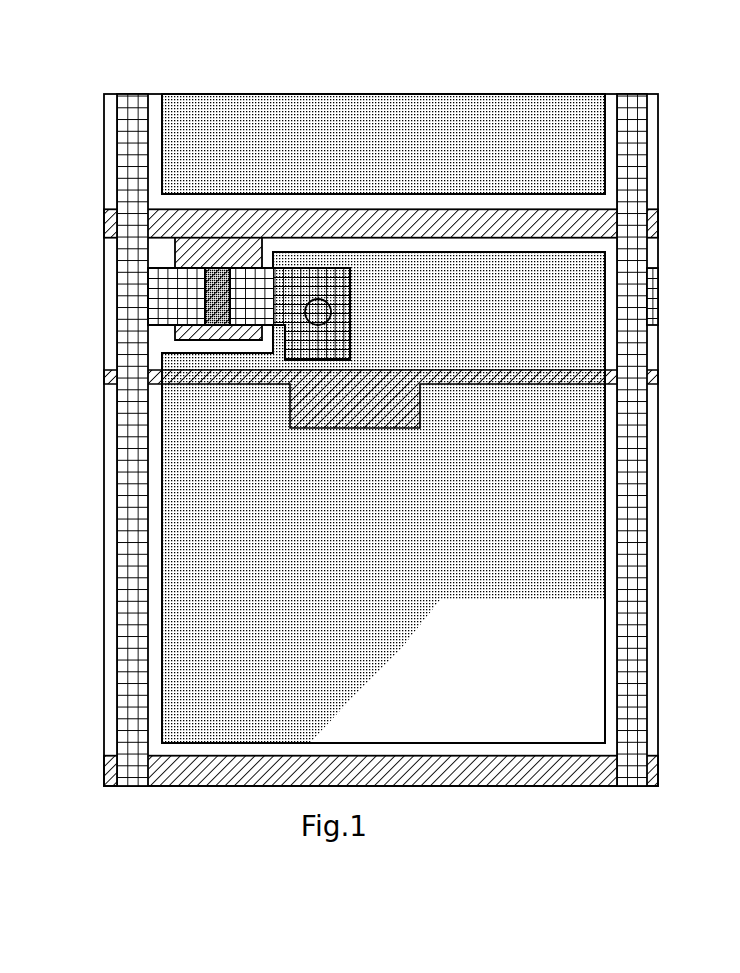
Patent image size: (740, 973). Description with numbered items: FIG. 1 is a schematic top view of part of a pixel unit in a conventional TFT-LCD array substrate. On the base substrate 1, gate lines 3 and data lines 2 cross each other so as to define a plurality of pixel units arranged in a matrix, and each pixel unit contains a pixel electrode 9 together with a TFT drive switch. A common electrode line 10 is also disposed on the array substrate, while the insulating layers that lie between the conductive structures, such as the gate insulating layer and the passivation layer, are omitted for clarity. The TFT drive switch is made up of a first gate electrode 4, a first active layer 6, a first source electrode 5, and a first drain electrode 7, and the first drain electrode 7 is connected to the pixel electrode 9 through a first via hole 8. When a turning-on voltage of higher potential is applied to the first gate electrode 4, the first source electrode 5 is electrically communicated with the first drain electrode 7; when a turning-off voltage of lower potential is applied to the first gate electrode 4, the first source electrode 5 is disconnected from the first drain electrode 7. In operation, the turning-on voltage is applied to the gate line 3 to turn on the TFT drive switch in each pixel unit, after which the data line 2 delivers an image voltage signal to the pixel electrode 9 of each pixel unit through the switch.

The base substrate 1 is at (157, 103).
The data line 2 is at (133, 103).
The gate line 3 is at (460, 230).
The first gate electrode 4 is at (223, 252).
The first source electrode 5 is at (168, 292).
The first active layer 6 is at (218, 302).
The first drain electrode 7 is at (250, 297).
The first via hole 8 is at (314, 310).
The pixel electrode 9 is at (213, 502).
The common electrode line 10 is at (111, 378).